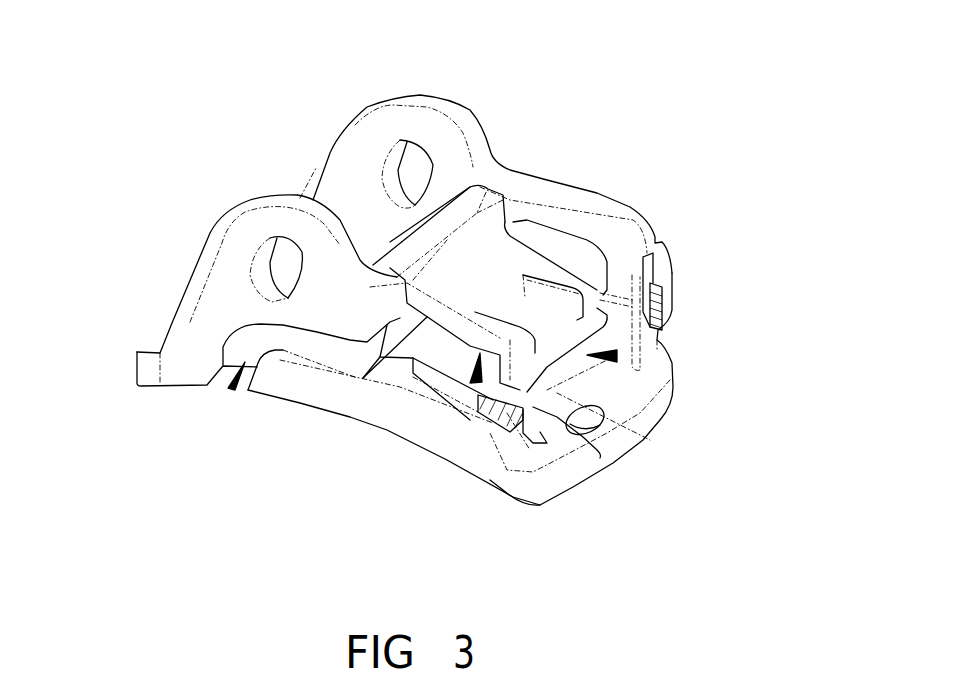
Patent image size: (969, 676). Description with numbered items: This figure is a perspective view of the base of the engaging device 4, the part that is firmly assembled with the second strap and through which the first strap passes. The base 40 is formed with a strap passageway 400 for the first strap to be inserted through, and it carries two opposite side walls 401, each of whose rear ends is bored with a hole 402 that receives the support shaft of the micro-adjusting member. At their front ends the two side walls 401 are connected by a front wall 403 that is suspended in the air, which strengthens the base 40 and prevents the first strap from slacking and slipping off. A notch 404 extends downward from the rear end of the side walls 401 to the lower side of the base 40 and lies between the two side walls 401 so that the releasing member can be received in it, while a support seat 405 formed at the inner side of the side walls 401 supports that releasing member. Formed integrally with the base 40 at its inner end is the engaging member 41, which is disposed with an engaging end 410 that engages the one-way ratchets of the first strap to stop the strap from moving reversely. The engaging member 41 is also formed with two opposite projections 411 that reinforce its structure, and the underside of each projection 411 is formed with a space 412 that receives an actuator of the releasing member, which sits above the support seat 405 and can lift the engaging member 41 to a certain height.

The engaging device 4 is at (193, 263).
The base 40 is at (369, 421).
The engaging member 41 is at (500, 285).
The strap passageway 400 is at (617, 354).
The side walls 401 is at (347, 215).
The hole 402 is at (410, 165).
The front wall 403 is at (665, 299).
The notch 404 is at (223, 390).
The support seat 405 is at (660, 228).
The engaging end 410 is at (548, 385).
The projections 411 is at (540, 325).
The space 412 is at (490, 415).